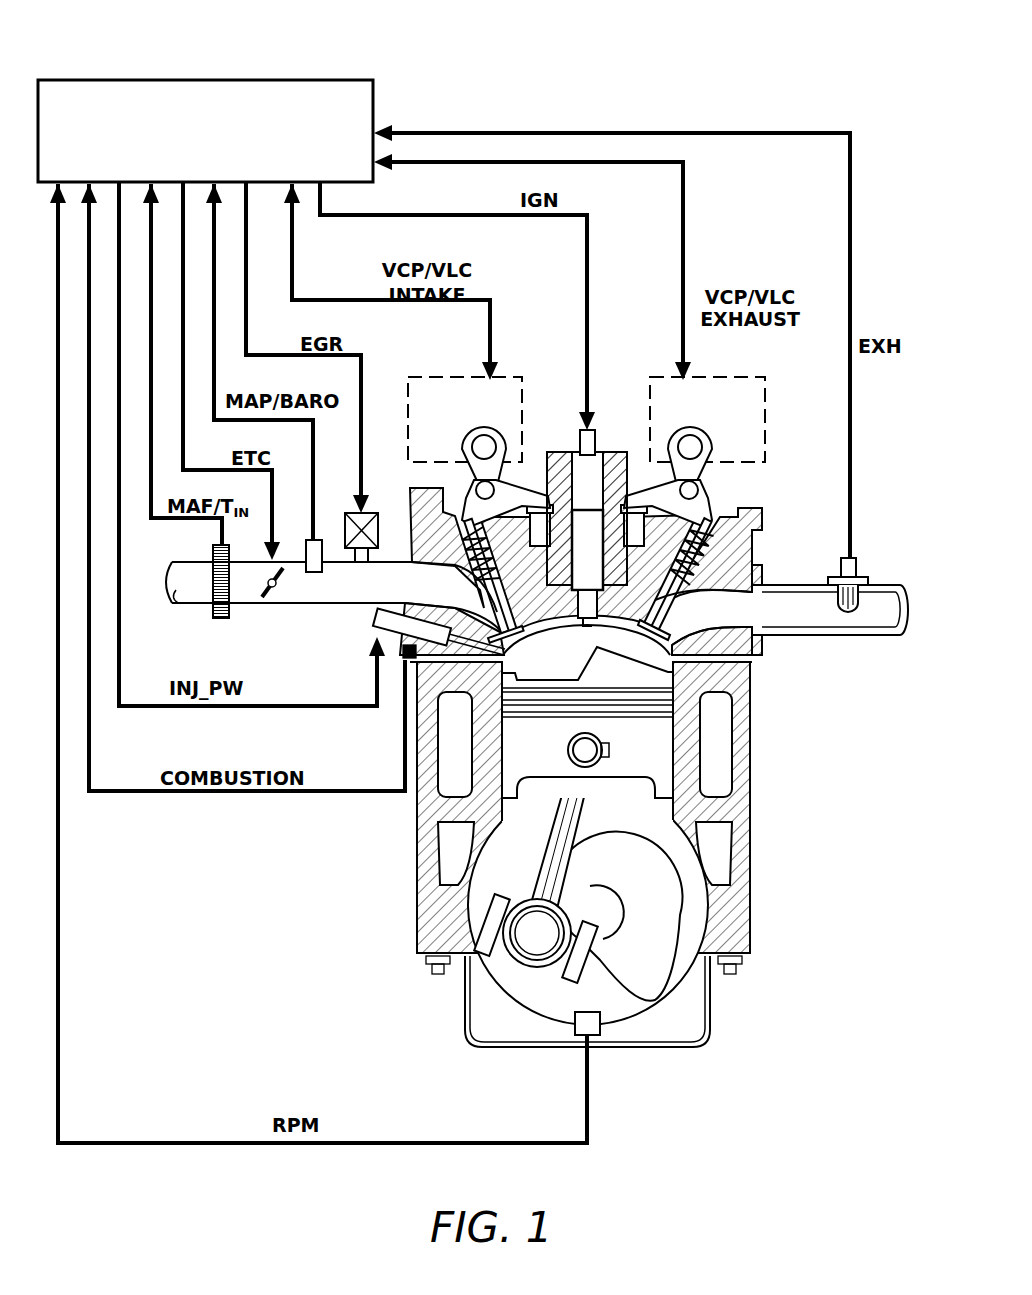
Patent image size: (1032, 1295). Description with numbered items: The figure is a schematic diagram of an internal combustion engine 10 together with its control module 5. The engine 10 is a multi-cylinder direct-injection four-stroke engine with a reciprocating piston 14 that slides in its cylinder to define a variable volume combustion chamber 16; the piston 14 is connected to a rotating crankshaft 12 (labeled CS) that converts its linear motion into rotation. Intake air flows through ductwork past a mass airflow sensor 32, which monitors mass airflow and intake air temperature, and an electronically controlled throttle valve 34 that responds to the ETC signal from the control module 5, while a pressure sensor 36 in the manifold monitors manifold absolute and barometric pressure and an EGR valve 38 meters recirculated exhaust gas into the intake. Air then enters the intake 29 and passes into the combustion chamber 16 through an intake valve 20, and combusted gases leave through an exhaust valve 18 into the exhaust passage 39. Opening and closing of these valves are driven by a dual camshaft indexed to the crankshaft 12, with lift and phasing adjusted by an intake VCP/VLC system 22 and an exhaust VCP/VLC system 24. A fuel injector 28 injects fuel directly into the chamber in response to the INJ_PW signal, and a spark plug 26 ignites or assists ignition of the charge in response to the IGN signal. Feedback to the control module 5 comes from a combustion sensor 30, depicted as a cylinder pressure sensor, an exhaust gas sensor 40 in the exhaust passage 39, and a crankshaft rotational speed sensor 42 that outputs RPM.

The control module 5 is at (328, 85).
The internal combustion engine 10 is at (757, 818).
The crankshaft 12 is at (648, 973).
The piston 14 is at (652, 762).
The combustion chamber 16 is at (563, 667).
The exhaust valve 18 is at (660, 622).
The intake valve 20 is at (500, 612).
The intake VCP/VLC system 22 is at (513, 383).
The exhaust VCP/VLC system 24 is at (753, 443).
The spark plug 26 is at (597, 433).
The fuel injector 28 is at (372, 620).
The intake 29 is at (390, 568).
The combustion sensor 30 is at (405, 662).
The mass airflow sensor 32 is at (221, 618).
The throttle valve 34 is at (270, 600).
The pressure sensor 36 is at (314, 572).
The EGR valve 38 is at (352, 548).
The exhaust passage 39 is at (740, 602).
The exhaust gas sensor 40 is at (851, 572).
The crankshaft rotational speed sensor 42 is at (575, 1025).